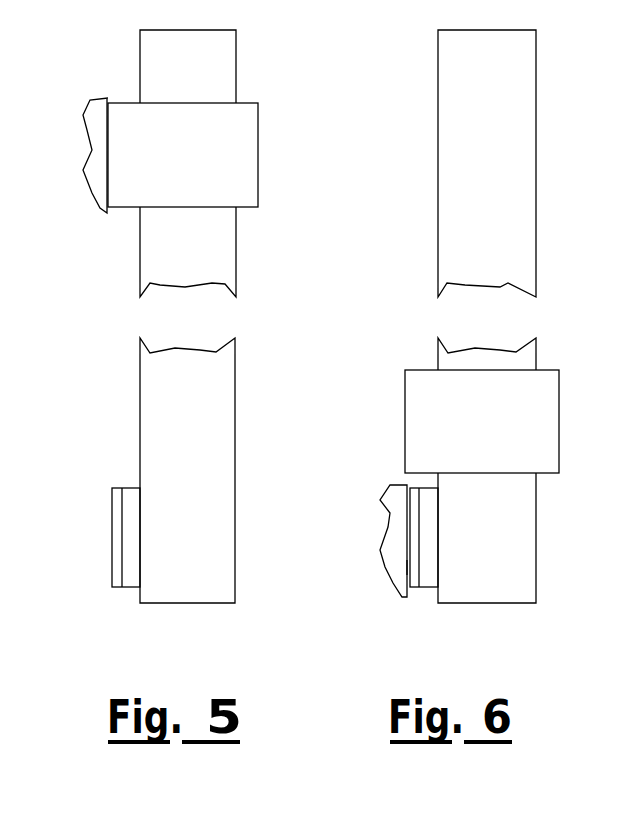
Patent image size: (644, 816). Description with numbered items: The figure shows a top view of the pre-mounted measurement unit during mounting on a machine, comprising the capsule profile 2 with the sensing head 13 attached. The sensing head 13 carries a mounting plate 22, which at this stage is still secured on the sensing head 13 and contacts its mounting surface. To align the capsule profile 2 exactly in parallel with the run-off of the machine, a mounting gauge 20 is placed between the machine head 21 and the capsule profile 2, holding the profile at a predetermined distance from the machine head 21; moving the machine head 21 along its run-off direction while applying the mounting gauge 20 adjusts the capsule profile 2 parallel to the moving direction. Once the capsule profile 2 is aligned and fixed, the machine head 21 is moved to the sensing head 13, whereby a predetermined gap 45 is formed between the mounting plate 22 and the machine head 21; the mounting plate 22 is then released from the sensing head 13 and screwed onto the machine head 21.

In FIG. 5, the capsule profile 2 is at (143, 62).
In FIG. 6, the capsule profile 2 is at (440, 57).
In FIG. 5, the mounting gauge 20 is at (250, 168).
In FIG. 6, the mounting gauge 20 is at (553, 426).
In FIG. 5, the machine head 21 is at (100, 140).
In FIG. 6, the machine head 21 is at (390, 547).
In FIG. 5, the sensing head 13 is at (133, 580).
In FIG. 6, the sensing head 13 is at (428, 578).
In FIG. 5, the mounting plate 22 is at (115, 588).
In FIG. 6, the mounting plate 22 is at (413, 585).
In FIG. 6, the gap 45 is at (408, 565).